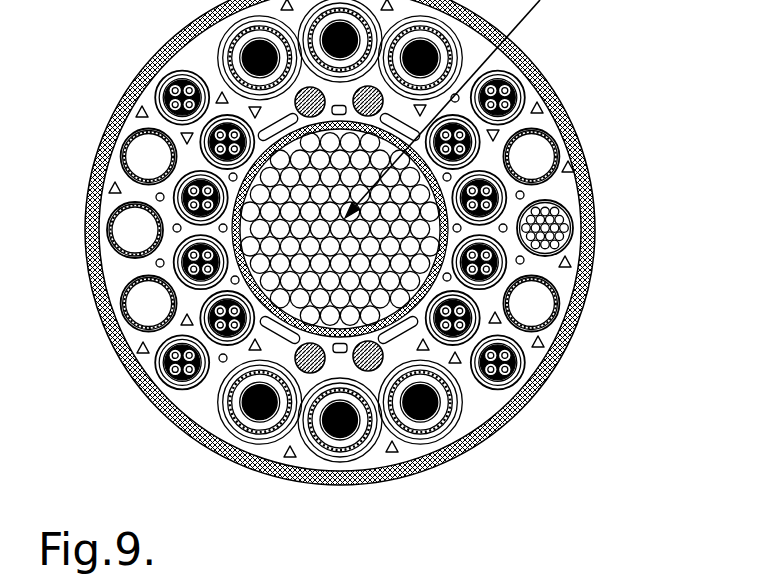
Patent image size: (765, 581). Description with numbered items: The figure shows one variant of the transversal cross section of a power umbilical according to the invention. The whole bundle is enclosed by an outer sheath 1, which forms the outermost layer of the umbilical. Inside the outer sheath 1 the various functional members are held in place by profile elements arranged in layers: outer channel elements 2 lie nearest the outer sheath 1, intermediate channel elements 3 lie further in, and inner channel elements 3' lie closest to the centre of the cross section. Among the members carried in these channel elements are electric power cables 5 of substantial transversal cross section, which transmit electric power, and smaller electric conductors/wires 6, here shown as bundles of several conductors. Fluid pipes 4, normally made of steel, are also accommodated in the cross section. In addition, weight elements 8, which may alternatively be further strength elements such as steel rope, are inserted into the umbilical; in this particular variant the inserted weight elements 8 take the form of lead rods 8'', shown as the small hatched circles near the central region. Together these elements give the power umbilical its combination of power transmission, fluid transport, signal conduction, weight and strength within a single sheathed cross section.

The outer sheath 1 is at (128, 95).
The outer channel elements 2 is at (568, 163).
The intermediate channel elements 3 is at (592, 207).
The inner channel elements 3' is at (572, 254).
The fluid pipes 4 is at (559, 156).
The electric power cables 5 is at (437, 407).
The electric conductors/wires 6 is at (516, 364).
The weight elements 8 is at (631, 228).
The lead rods 8'' is at (417, 426).